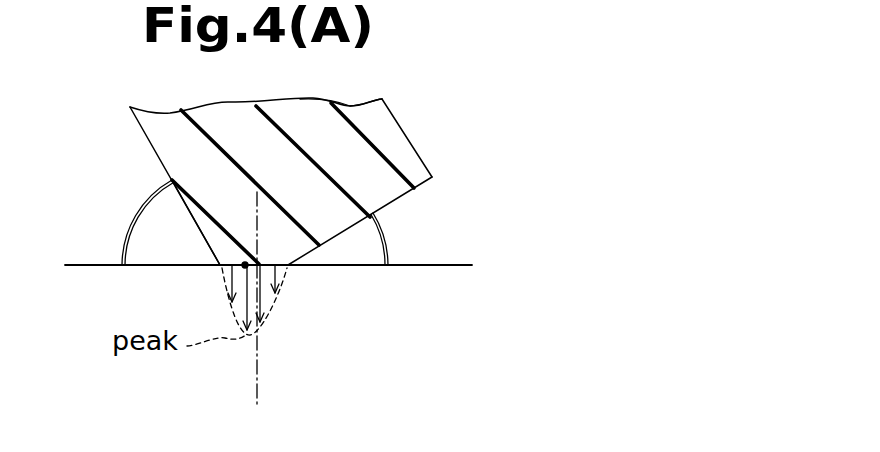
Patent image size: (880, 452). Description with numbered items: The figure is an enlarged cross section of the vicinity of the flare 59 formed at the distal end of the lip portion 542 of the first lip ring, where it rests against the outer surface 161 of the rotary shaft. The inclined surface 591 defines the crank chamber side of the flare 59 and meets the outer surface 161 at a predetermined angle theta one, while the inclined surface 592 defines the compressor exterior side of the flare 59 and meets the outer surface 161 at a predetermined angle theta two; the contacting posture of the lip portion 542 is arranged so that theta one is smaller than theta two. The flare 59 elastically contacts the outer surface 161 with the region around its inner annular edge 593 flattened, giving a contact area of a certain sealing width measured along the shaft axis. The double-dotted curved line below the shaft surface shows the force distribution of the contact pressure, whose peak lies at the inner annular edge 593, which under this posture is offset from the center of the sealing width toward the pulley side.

The flare 59 is at (235, 213).
The lip portion 542 is at (361, 107).
The inclined surface 591 is at (343, 232).
The inclined surface 592 is at (176, 194).
The inner annular edge 593 is at (246, 264).
The outer surface 161 is at (470, 263).